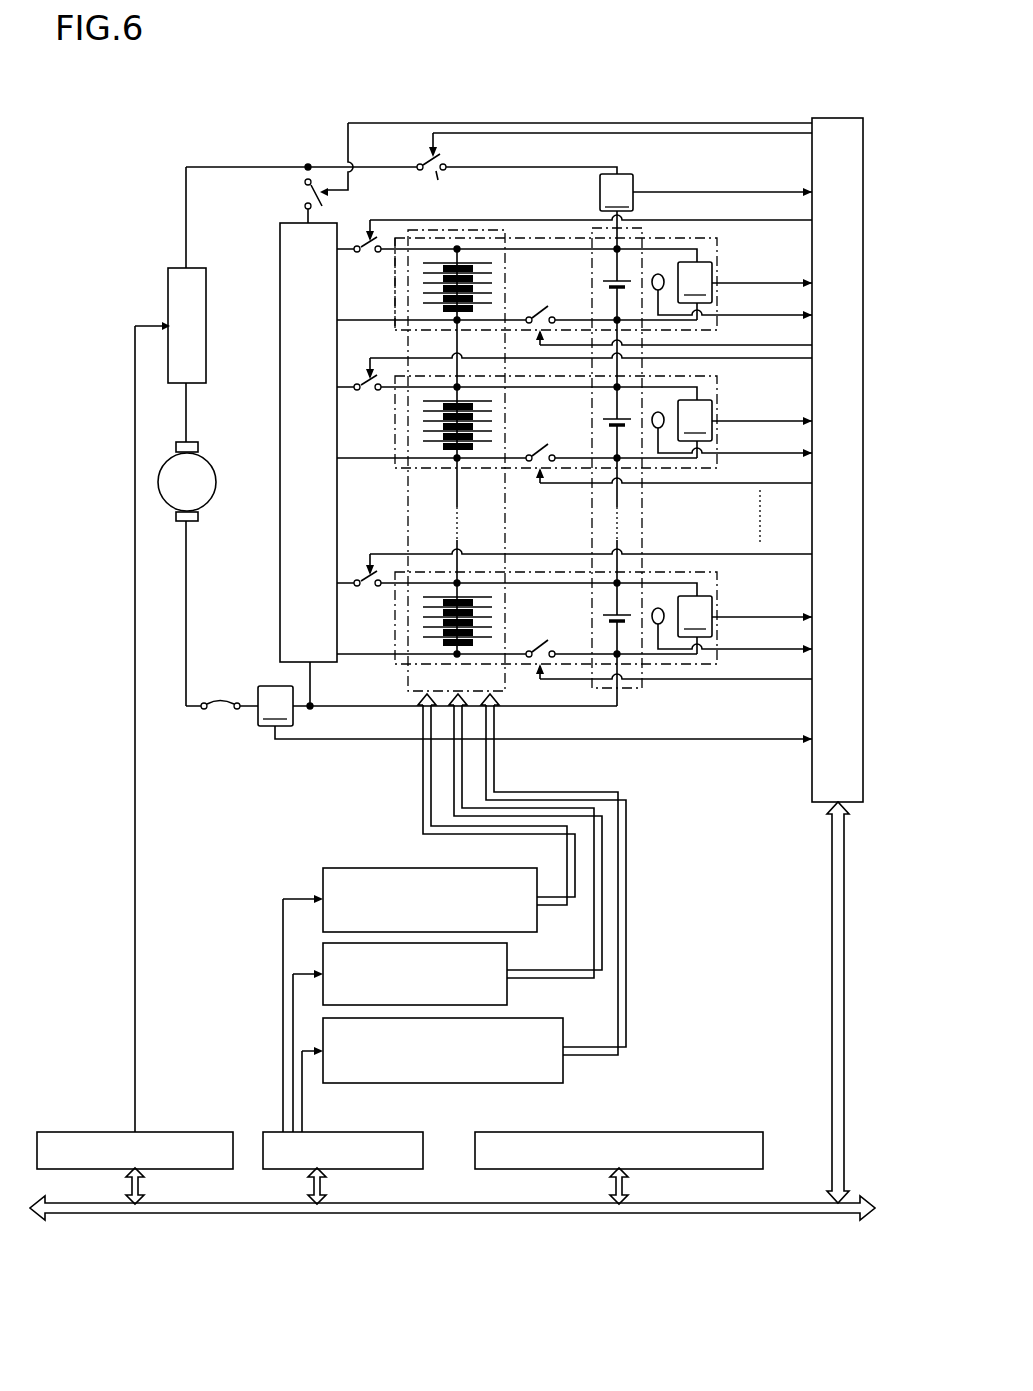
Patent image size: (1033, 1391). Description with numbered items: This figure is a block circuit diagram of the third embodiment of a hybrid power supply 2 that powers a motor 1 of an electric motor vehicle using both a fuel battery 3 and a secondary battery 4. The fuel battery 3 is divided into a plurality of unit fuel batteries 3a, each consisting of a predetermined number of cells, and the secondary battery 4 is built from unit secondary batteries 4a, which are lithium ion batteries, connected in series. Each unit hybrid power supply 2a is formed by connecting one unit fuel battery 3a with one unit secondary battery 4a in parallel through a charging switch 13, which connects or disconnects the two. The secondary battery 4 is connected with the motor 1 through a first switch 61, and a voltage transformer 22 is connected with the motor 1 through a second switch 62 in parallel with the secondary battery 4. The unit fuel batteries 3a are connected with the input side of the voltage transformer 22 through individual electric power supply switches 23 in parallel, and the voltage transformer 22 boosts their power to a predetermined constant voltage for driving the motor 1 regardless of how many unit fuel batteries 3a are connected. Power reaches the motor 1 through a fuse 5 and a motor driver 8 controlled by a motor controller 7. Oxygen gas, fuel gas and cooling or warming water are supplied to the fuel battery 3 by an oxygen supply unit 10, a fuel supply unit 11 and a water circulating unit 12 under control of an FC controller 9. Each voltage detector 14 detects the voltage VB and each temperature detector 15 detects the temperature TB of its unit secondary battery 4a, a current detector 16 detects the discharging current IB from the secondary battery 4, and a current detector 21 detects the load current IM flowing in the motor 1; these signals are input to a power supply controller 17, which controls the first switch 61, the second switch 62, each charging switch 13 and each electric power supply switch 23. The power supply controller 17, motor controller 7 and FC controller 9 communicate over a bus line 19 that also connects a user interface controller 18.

The motor 1 is at (216, 482).
The hybrid power supply 2 is at (383, 672).
The unit hybrid power supply 2a is at (567, 237).
The fuel battery 3 is at (408, 496).
The unit fuel battery 3a is at (425, 288).
The secondary battery 4 is at (643, 500).
The unit secondary battery 4a is at (603, 281).
The fuse 5 is at (221, 712).
The first switch 61 is at (431, 178).
The second switch 62 is at (306, 198).
The motor controller 7 is at (212, 1131).
The motor driver 8 is at (206, 328).
The FC controller 9 is at (275, 1131).
The oxygen supply unit 10 is at (343, 866).
The fuel supply unit 11 is at (323, 951).
The water circulating unit 12 is at (436, 1084).
The charging switch 13 is at (536, 306).
The voltage detector 14 is at (745, 448).
The temperature detector 15 is at (650, 285).
The current detector 16 is at (706, 190).
The power supply controller 17 is at (812, 776).
The user interface controller 18 is at (625, 1131).
The bus line 19 is at (778, 1202).
The current detector 21 is at (535, 714).
The voltage transformer 22 is at (280, 395).
The electric power supply switch 23 is at (365, 253).